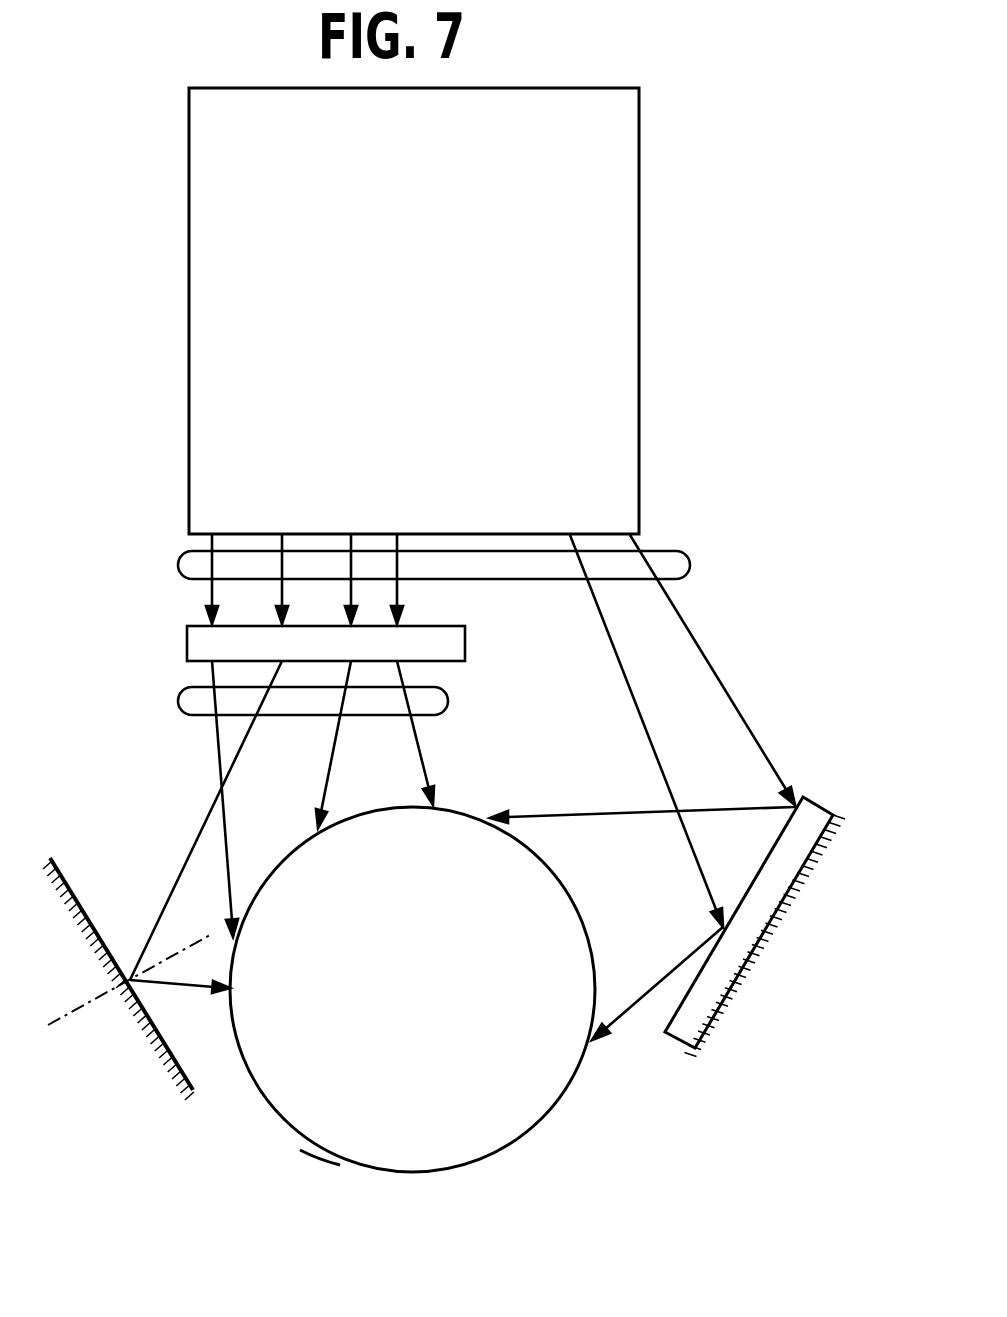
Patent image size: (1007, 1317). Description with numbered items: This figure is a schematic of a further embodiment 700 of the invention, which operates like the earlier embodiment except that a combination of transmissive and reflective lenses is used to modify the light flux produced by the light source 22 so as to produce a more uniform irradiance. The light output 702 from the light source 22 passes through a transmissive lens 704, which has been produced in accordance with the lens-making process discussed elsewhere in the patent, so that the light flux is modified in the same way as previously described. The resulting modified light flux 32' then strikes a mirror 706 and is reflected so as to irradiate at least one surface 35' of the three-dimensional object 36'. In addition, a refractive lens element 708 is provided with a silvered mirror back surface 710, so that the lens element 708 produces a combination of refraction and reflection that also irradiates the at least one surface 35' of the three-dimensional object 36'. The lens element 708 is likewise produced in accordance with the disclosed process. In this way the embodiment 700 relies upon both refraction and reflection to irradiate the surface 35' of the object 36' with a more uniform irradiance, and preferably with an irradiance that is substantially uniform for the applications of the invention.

The embodiment 700 is at (680, 191).
The light source 22 is at (440, 332).
The light output 702 is at (178, 565).
The transmissive lens 704 is at (466, 636).
The modified light flux 32' is at (350, 715).
The mirror 706 is at (63, 870).
The refractive lens element 708 is at (808, 797).
The silvered mirror back surface 710 is at (776, 916).
The surface 35' is at (412, 989).
The 3D object 36' is at (275, 1173).